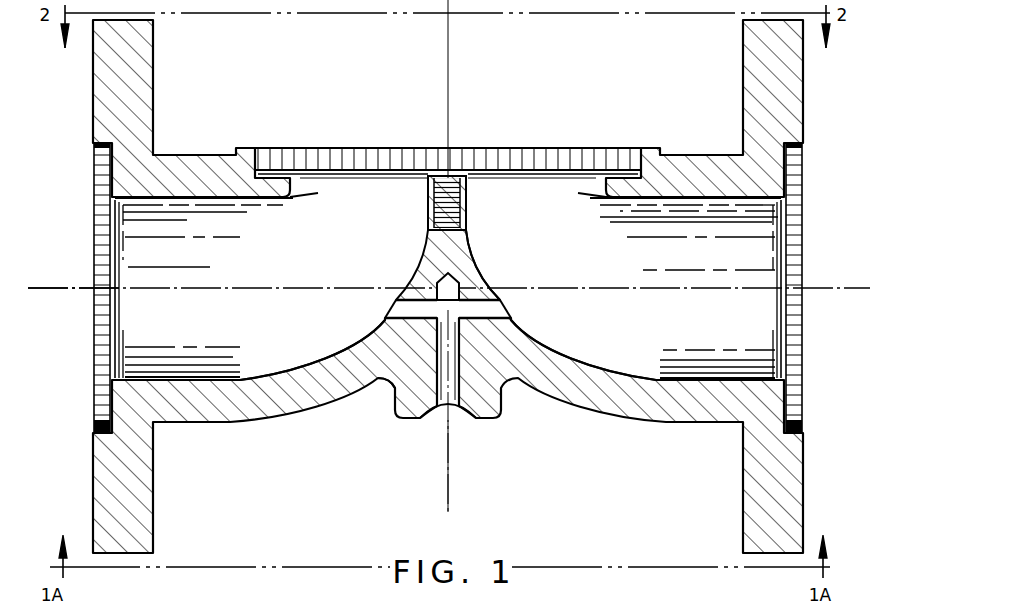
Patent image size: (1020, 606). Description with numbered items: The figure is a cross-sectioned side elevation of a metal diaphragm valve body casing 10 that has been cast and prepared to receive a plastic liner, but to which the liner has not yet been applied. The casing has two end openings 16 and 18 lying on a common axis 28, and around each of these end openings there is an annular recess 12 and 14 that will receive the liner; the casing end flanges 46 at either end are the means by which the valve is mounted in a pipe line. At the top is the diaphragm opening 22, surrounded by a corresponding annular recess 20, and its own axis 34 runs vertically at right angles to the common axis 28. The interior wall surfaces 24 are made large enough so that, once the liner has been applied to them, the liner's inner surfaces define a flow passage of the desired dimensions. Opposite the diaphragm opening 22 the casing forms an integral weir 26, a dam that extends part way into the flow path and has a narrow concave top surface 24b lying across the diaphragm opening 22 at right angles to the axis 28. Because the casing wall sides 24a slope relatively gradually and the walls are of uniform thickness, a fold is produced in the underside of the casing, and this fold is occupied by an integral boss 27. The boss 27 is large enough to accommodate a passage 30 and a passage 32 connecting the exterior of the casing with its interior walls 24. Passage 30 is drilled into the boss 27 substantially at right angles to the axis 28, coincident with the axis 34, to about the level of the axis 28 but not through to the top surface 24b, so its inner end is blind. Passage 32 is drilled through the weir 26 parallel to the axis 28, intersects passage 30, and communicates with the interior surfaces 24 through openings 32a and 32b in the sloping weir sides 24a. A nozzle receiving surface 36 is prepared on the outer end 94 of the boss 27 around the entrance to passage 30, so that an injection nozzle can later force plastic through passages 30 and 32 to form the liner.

The metal diaphragm valve body casing 10 is at (667, 424).
The annular recess 12 is at (97, 412).
The annular recess 14 is at (794, 190).
The end opening 16 is at (115, 296).
The end opening 18 is at (776, 281).
The annular recess 20 is at (267, 165).
The diaphragm opening 22 is at (366, 186).
The interior wall surfaces 24 is at (689, 200).
The casing wall sides 24a is at (483, 283).
The concave top surface 24b is at (460, 207).
The weir 26 is at (455, 260).
The integral boss 27 is at (412, 393).
The common axis 28 is at (66, 286).
The passage 30 is at (451, 378).
The passage 32 is at (489, 310).
The opening 32a is at (498, 303).
The opening 32b is at (391, 299).
The axis of the diaphragm opening 34 is at (451, 480).
The nozzle receiving surface 36 is at (470, 420).
The casing end flanges 46 is at (788, 70).
The outer end 94 is at (410, 419).